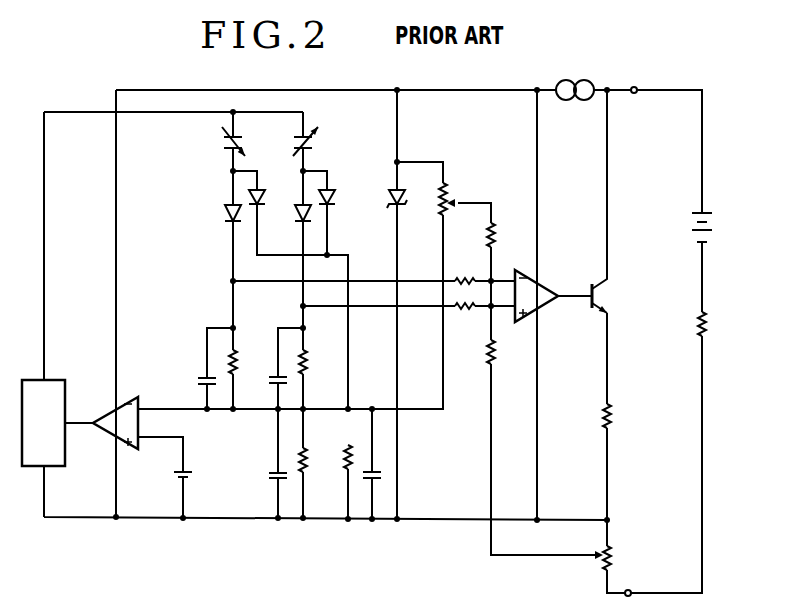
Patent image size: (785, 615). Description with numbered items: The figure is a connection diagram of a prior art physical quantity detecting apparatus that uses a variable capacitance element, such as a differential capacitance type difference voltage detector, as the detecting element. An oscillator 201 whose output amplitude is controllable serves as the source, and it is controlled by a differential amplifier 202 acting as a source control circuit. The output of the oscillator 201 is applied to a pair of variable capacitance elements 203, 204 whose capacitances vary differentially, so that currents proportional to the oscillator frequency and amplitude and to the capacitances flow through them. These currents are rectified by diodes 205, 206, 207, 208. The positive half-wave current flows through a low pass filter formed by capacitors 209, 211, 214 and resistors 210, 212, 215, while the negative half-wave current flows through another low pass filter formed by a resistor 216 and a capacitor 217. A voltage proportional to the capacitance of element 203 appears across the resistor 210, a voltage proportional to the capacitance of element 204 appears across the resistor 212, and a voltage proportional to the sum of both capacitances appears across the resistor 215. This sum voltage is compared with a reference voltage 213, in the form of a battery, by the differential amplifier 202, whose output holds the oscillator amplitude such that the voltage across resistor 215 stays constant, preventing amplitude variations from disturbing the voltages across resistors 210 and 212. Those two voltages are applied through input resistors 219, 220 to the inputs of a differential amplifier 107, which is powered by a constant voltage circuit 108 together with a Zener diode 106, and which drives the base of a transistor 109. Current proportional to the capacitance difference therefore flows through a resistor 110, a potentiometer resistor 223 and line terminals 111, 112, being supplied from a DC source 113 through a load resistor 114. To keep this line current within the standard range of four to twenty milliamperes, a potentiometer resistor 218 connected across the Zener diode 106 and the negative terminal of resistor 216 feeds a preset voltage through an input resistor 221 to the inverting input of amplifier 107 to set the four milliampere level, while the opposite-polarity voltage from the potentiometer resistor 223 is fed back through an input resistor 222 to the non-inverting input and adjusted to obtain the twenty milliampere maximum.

The Zener diode 106 is at (412, 193).
The differential amplifier 107 is at (536, 296).
The constant voltage circuit 108 is at (575, 77).
The transistor 109 is at (617, 297).
The resistor 110 is at (624, 413).
The line terminal 111 is at (638, 76).
The line terminal 112 is at (635, 581).
The DC source 113 is at (719, 227).
The load resistor 114 is at (720, 324).
The oscillator 201 is at (52, 404).
The differential amplifier 202 is at (115, 423).
The variable capacitance element 203 is at (245, 135).
The variable capacitance element 204 is at (321, 134).
The diode 205 is at (228, 214).
The diode 206 is at (270, 189).
The diode 207 is at (297, 215).
The diode 208 is at (343, 192).
The capacitor 209 is at (196, 367).
The resistor 210 is at (250, 357).
The capacitor 211 is at (270, 379).
The resistor 212 is at (318, 354).
The reference voltage 213 is at (198, 459).
The capacitor 214 is at (271, 474).
The resistor 215 is at (306, 456).
The resistor 216 is at (345, 463).
The capacitor 217 is at (378, 475).
The potentiometer resistor 218 is at (460, 193).
The input resistor 219 is at (470, 266).
The input resistor 220 is at (470, 321).
The input resistor 221 is at (508, 229).
The input resistor 222 is at (507, 359).
The potentiometer resistor 223 is at (619, 553).